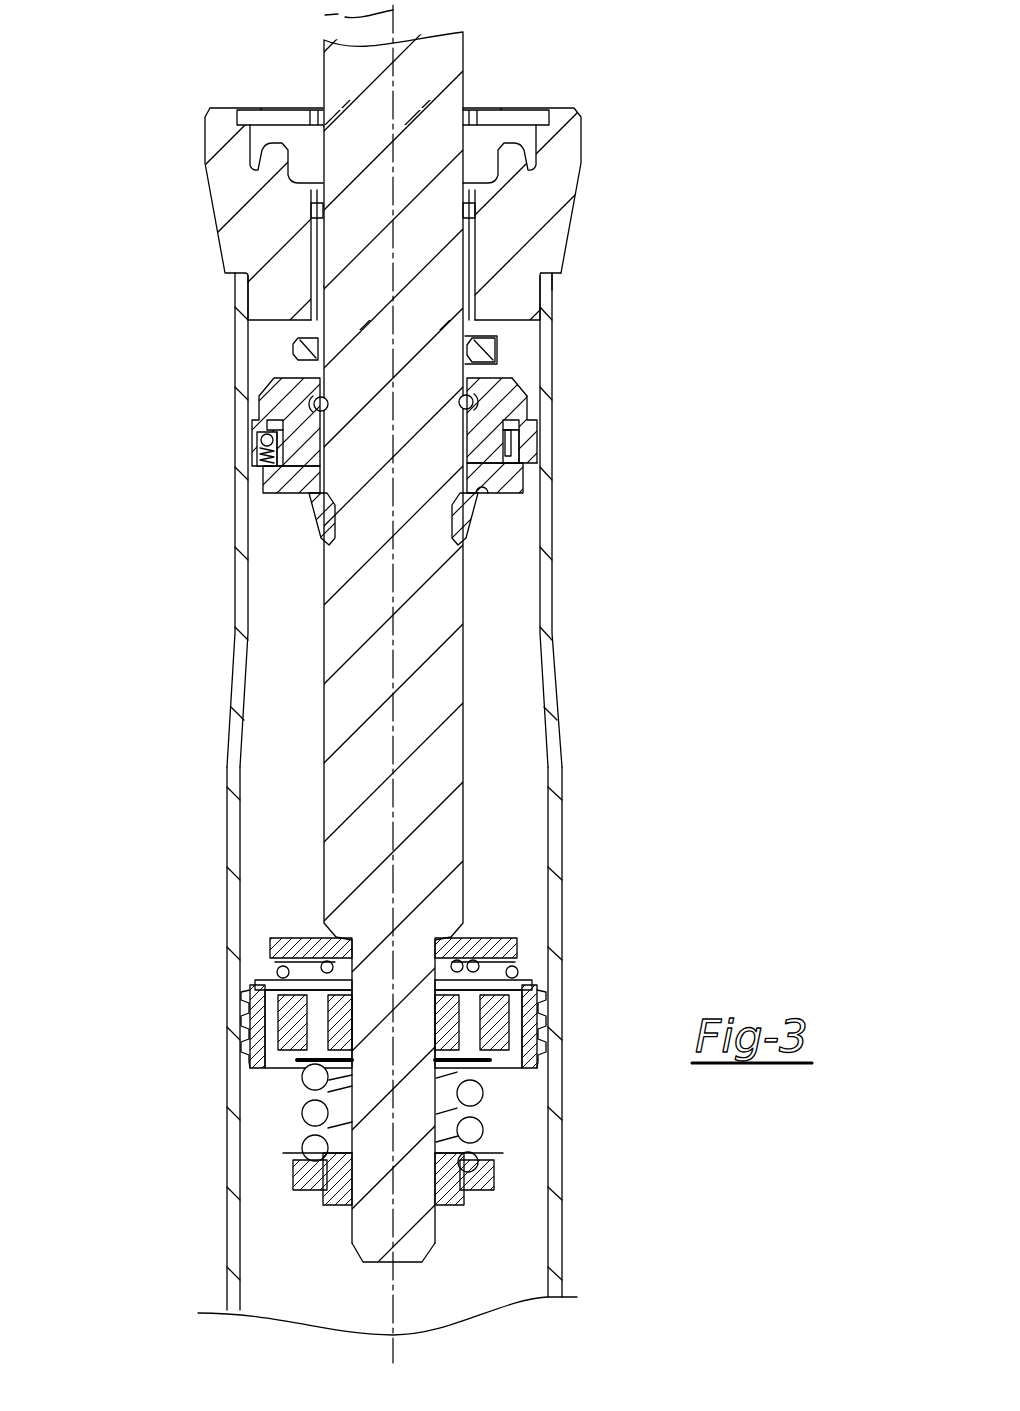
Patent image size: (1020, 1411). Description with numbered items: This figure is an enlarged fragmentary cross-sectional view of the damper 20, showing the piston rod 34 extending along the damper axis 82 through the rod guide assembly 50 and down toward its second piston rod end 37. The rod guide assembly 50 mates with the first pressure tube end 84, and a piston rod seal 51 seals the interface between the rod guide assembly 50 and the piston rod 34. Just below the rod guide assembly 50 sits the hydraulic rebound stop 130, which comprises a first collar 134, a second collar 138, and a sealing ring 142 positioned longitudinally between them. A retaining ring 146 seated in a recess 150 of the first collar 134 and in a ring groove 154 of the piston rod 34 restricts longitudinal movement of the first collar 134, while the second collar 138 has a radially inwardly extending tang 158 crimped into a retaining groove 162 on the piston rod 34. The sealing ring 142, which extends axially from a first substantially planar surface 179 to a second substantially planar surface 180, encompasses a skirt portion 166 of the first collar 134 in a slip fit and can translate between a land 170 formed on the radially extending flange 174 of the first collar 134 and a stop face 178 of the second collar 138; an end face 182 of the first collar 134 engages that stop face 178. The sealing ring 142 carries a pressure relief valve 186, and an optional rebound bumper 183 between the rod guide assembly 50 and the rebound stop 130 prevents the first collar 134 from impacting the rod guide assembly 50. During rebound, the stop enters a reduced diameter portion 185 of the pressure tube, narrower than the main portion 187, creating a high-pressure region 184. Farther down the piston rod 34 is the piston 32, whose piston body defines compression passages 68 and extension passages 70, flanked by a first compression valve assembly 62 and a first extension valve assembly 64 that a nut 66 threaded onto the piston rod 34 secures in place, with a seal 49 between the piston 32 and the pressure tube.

The damper 20 is at (583, 684).
The damper axis 82 is at (305, 19).
The piston rod 34 is at (437, 72).
The second piston rod end 37 is at (468, 1303).
The rod guide assembly 50 is at (334, 325).
The first pressure tube end 84 is at (547, 287).
The piston rod seal 51 is at (311, 213).
The high-pressure region 184 is at (281, 356).
The rebound bumper 183 is at (572, 325).
The recess 150 is at (496, 356).
The reduced diameter portion 185 is at (243, 630).
The main portion 187 is at (233, 1175).
The retaining ring 146 is at (318, 400).
The ring groove 154 is at (329, 405).
The radially extending flange 174 is at (260, 415).
The land 170 is at (263, 428).
The pressure relief valve 186 is at (189, 446).
The skirt portion 166 is at (293, 458).
The end face 182 is at (290, 490).
The retaining groove 162 is at (323, 530).
The hydraulic rebound stop 130 is at (609, 474).
The first collar 134 is at (502, 397).
The first substantially planar surface 179 is at (527, 418).
The second substantially planar surface 180 is at (534, 466).
The sealing ring 142 is at (538, 452).
The stop face 178 is at (524, 492).
The second collar 138 is at (500, 490).
The tang 158 is at (540, 544).
The first compression valve assembly 62 is at (270, 973).
The piston 32 is at (368, 1026).
The first plurality of compression passages 68 is at (275, 1008).
The first plurality of extension passages 70 is at (470, 1018).
The seal 49 is at (245, 1055).
The first extension valve assembly 64 is at (300, 1088).
The nut 66 is at (330, 1200).